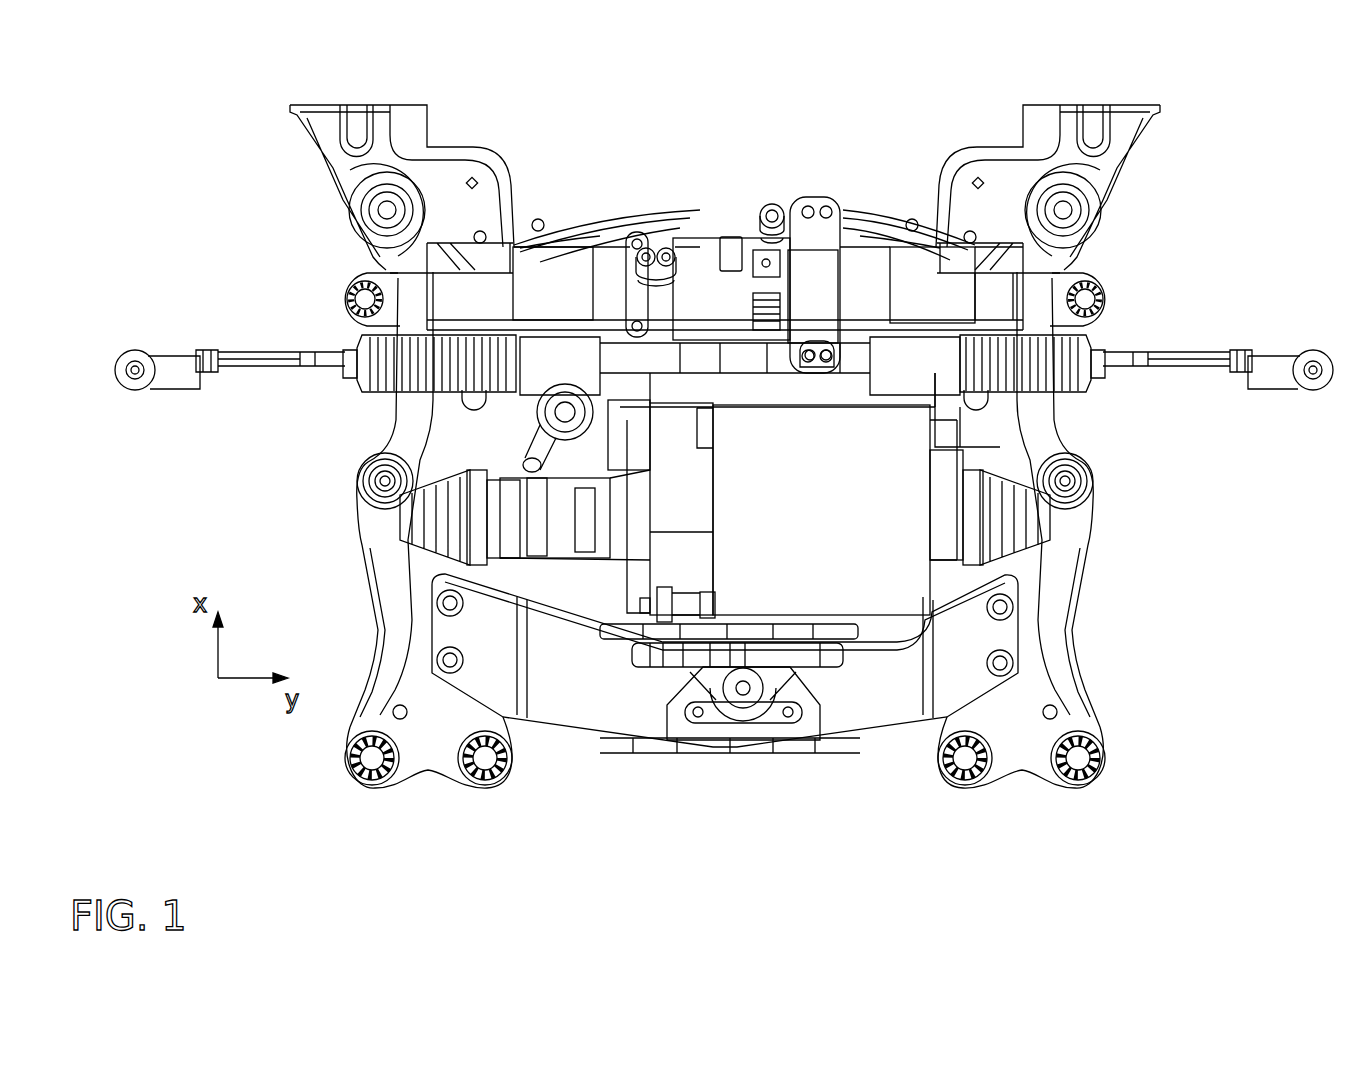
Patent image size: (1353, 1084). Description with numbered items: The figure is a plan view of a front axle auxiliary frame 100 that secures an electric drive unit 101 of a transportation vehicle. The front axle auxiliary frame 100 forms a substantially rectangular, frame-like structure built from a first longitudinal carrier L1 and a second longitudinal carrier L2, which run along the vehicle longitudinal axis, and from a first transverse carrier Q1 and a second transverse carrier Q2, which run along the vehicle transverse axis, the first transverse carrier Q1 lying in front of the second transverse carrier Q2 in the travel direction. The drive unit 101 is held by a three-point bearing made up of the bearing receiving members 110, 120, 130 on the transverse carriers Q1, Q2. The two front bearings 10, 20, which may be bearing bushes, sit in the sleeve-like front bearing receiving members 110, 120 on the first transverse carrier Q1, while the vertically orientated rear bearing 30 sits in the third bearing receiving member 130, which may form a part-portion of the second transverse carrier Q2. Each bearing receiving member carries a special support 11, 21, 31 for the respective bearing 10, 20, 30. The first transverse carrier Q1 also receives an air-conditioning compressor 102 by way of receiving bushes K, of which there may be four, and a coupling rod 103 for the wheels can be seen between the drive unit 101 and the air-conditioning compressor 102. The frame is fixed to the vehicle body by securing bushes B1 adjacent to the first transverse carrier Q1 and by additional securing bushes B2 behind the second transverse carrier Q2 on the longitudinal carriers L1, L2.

The front axle auxiliary frame 100 is at (1222, 146).
The first front bearing receiving member 110 is at (545, 160).
The second front bearing receiving member 120 is at (928, 160).
The third bearing receiving member 130 is at (726, 770).
The first front bearing 10 is at (578, 208).
The first support 11 is at (640, 396).
The second front bearing 20 is at (915, 225).
The second support 21 is at (962, 398).
The rear bearing 30 is at (783, 740).
The third support 31 is at (817, 672).
The drive unit 101 is at (927, 583).
The air-conditioning compressor 102 is at (705, 245).
The coupling rod 103 is at (236, 362).
The receiving bushes K is at (638, 208).
The securing bushes B1 is at (355, 298).
The additional securing bushes B2 is at (372, 770).
The first longitudinal carrier L1 is at (412, 407).
The second longitudinal carrier L2 is at (1038, 411).
The first transverse carrier Q1 is at (470, 287).
The second transverse carrier Q2 is at (595, 716).